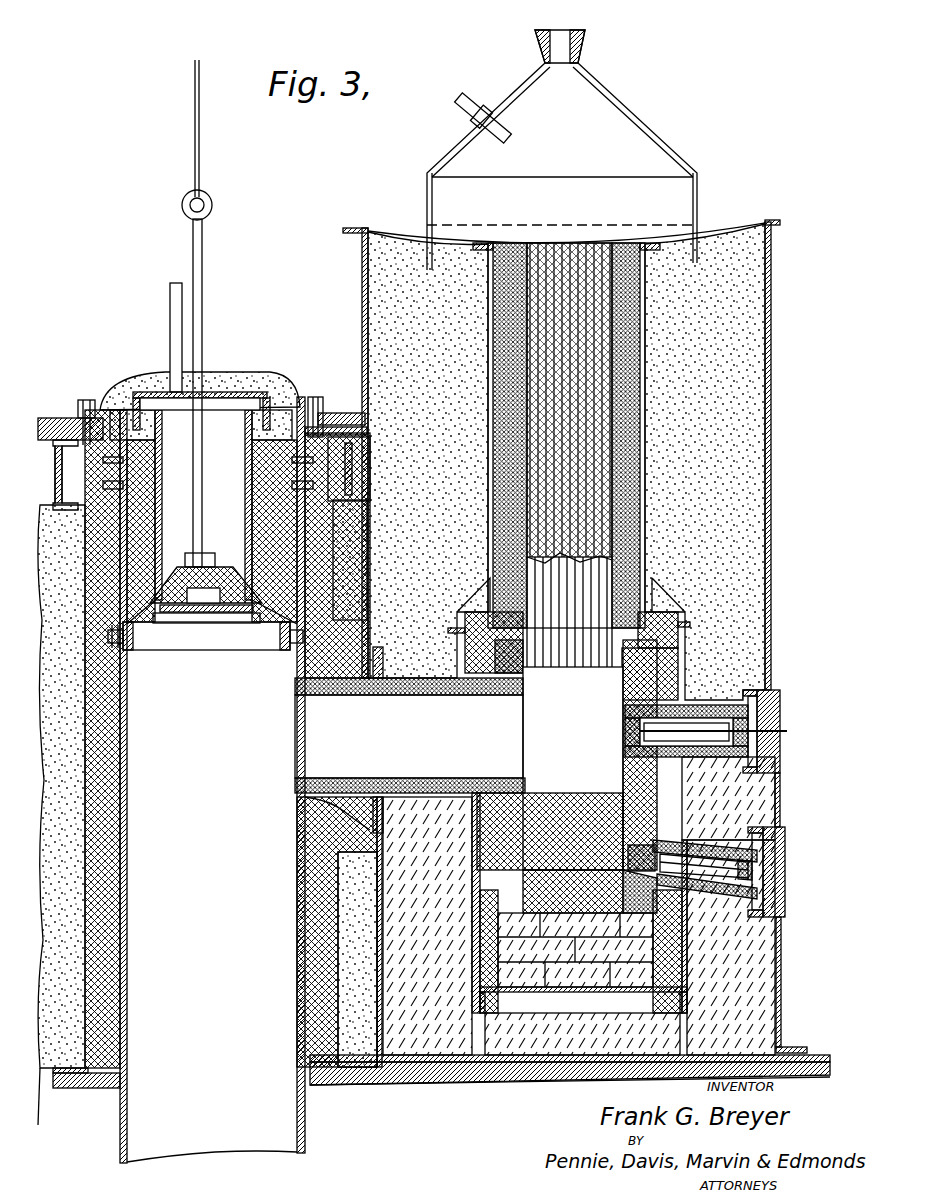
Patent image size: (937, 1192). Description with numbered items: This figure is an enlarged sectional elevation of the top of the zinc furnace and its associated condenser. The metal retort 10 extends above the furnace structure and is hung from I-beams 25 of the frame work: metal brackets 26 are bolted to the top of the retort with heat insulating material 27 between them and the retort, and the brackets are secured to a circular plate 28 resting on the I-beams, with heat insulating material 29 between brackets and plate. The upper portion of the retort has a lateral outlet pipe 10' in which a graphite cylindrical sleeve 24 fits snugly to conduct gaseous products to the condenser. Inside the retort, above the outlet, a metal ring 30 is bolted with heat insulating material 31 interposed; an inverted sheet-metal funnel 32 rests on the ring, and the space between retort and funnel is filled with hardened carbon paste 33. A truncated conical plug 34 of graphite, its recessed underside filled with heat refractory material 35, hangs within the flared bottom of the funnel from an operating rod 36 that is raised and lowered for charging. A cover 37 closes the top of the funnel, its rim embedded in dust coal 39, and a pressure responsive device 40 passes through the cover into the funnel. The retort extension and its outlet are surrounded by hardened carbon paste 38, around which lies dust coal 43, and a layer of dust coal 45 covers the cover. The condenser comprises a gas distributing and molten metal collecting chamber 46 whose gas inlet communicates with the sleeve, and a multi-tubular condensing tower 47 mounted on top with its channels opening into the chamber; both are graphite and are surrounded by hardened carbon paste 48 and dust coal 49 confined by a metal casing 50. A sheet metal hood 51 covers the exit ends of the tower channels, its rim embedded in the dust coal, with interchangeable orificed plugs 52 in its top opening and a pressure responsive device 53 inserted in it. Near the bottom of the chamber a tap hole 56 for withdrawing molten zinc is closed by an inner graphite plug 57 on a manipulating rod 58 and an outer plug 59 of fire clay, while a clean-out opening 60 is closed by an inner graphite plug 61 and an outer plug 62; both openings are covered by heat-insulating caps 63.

The metal retort 10 is at (179, 780).
The lateral outlet pipe 10' is at (537, 866).
The graphite cylindrical sleeve 24 is at (404, 778).
The I-beams 25 is at (55, 470).
The metal brackets 26 is at (318, 413).
The heat insulating material 27 is at (310, 397).
The circular plate 28 is at (62, 418).
The heat insulating material 29 is at (352, 410).
The metal ring 30 is at (285, 650).
The heat insulating material 31 is at (125, 650).
The inverted sheet-metal funnel 32 is at (156, 505).
The hardened carbon paste 33 is at (150, 472).
The truncated conical plug 34 is at (255, 606).
The heat refractory material 35 is at (200, 623).
The operating rod 36 is at (193, 238).
The cover 37 is at (242, 392).
The hardened carbon paste 38 is at (106, 800).
The dust coal 39 is at (125, 425).
The pressure responsive device 40 is at (180, 412).
The dust coal 43 is at (110, 900).
The layer of dust coal 45 is at (158, 372).
The gas distributing and molten metal collecting chamber 46 is at (569, 724).
The multi-tubular condensing tower 47 is at (569, 634).
The hardened carbon paste 48 is at (640, 500).
The dust coal 49 is at (745, 432).
The metal casing 50 is at (362, 326).
The sheet metal hood 51 is at (432, 160).
The plugs 52 is at (585, 50).
The pressure responsive device 53 is at (507, 137).
The tap hole 56 is at (725, 898).
The inner graphite plug 57 is at (628, 857).
The manipulating rod 58 is at (763, 840).
The outer plug 59 is at (755, 866).
The clean-out opening 60 is at (712, 755).
The inner graphite plug 61 is at (625, 736).
The outer plug 62 is at (763, 716).
The heat-insulating caps 63 is at (775, 690).